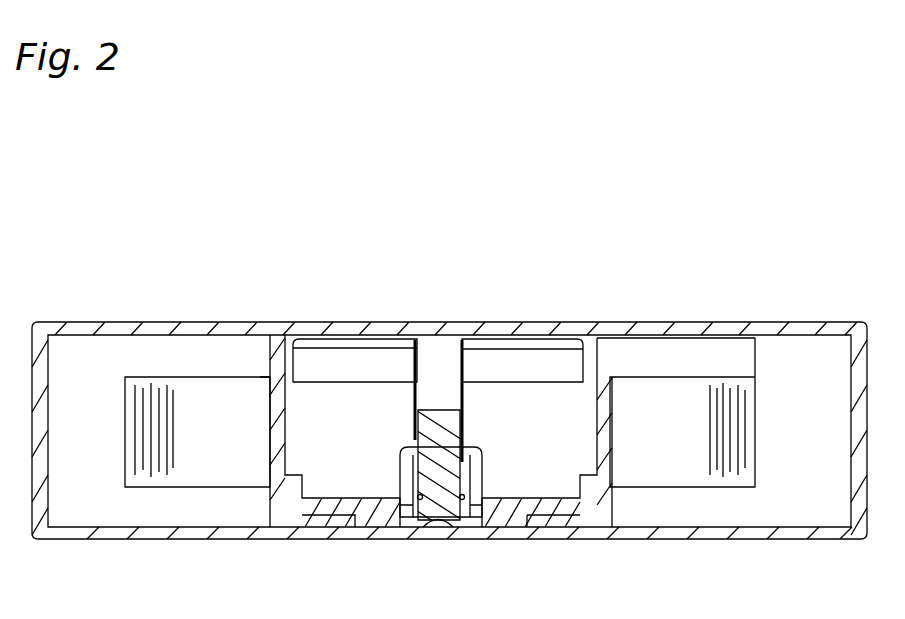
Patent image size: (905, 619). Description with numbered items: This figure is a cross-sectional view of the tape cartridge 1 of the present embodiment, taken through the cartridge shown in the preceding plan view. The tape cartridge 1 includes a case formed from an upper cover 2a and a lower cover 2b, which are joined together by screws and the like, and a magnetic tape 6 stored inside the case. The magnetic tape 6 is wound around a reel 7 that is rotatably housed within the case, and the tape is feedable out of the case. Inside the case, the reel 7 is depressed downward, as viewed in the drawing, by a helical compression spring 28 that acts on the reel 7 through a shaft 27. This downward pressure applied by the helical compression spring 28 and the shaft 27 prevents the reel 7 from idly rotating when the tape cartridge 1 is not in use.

The tape cartridge 1 is at (706, 243).
The upper cover 2a is at (798, 330).
The lower cover 2b is at (802, 530).
The magnetic tape 6 is at (665, 392).
The reel 7 is at (275, 377).
The shaft 27 is at (413, 410).
The helical compression spring 28 is at (468, 400).